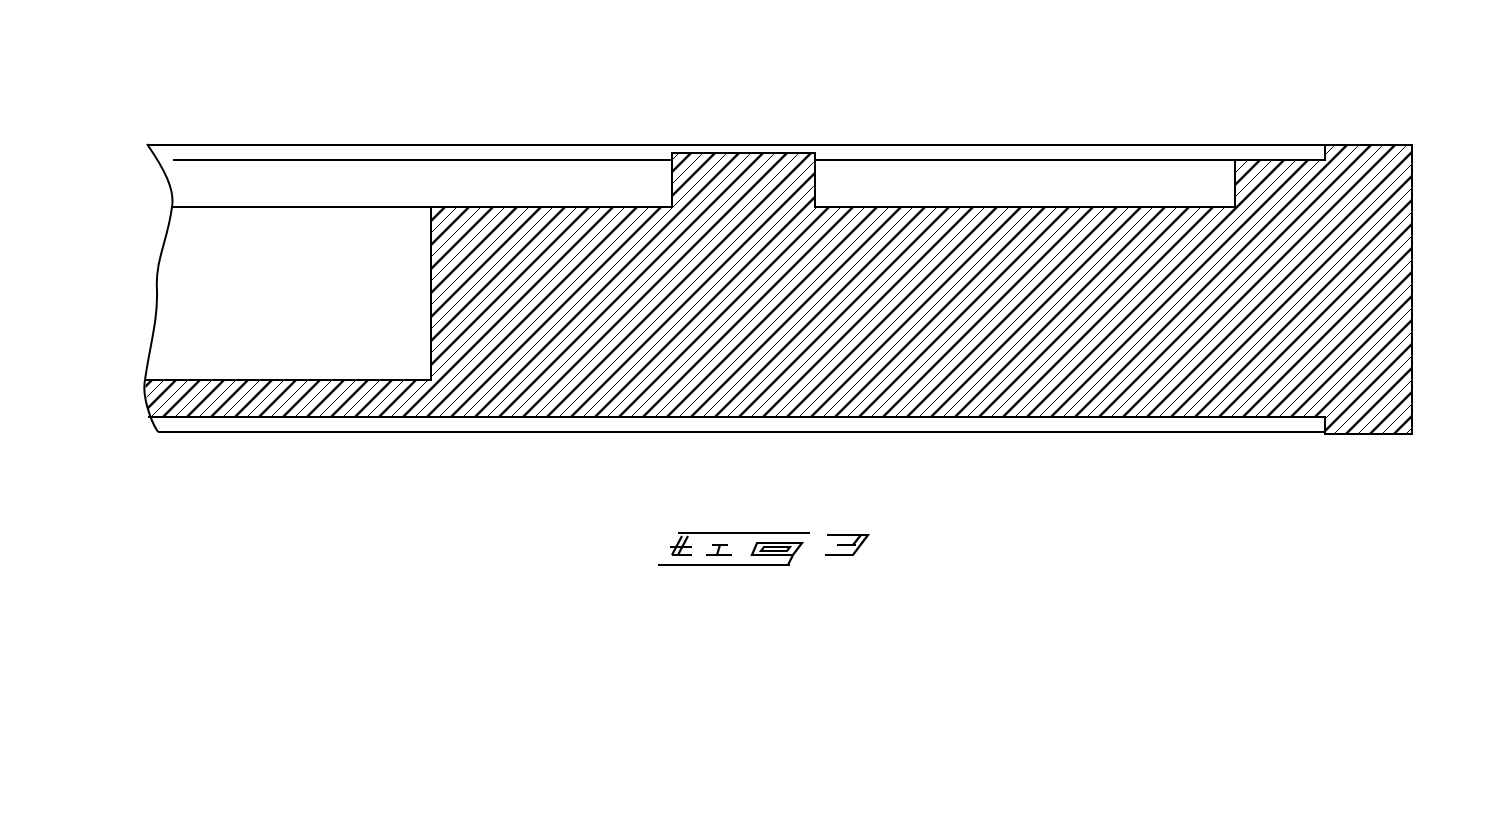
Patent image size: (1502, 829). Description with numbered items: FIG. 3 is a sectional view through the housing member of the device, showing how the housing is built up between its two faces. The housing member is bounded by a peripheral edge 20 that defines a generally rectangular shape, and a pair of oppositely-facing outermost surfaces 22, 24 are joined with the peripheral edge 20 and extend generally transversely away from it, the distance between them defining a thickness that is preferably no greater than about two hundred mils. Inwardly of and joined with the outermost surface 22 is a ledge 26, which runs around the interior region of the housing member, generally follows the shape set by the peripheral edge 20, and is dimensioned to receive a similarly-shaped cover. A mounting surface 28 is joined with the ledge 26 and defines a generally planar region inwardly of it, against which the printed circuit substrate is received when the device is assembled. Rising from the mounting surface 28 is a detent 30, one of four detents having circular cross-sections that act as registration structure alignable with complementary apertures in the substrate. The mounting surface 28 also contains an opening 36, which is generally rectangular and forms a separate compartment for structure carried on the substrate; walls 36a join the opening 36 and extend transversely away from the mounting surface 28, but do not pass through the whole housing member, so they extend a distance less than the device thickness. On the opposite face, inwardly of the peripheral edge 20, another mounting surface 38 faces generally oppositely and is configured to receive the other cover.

The peripheral edge 20 is at (1413, 198).
The outermost surface 22 is at (1371, 145).
The outermost surface 24 is at (1363, 434).
The ledge 26 is at (1280, 159).
The mounting surface 28 is at (545, 207).
The detent 30 is at (820, 176).
The opening 36 is at (319, 117).
The wall 36a is at (430, 292).
The mounting surface 38 is at (993, 418).